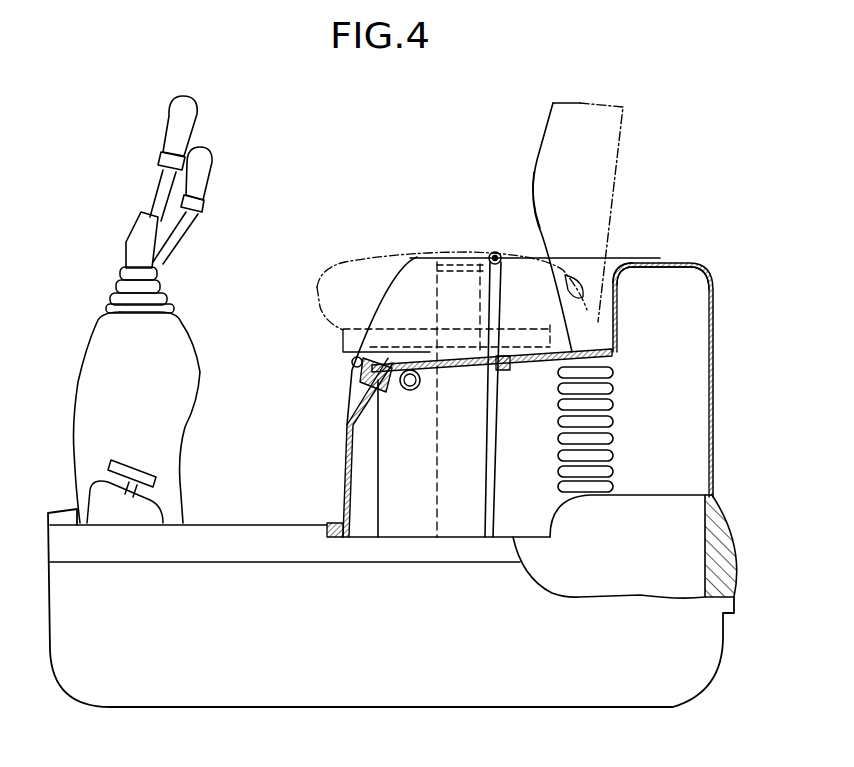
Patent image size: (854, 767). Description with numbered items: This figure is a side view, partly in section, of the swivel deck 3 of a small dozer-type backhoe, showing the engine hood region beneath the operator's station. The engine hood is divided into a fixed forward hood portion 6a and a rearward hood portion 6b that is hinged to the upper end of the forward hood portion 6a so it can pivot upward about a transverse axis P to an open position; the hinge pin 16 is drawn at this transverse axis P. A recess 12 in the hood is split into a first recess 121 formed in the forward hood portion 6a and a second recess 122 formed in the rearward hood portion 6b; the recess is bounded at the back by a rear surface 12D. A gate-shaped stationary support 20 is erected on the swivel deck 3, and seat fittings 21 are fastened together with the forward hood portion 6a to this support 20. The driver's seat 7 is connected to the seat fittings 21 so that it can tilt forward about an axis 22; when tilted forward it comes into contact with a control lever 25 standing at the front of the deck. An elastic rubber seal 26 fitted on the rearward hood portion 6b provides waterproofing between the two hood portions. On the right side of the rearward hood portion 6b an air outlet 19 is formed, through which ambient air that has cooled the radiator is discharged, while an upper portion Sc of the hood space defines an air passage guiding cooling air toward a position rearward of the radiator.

The swivel deck 3 is at (243, 547).
The control lever 25 is at (177, 110).
The driver's seat 7 is at (347, 263).
The forward hood portion 6a is at (345, 427).
The first recess 121 is at (427, 360).
The axis 22 is at (355, 363).
The seat fittings 21 is at (358, 388).
The transverse axis P is at (490, 252).
The pivot pin 16 is at (495, 255).
The gate-shaped stationary support 20 is at (467, 437).
The elastic rubber seal 26 is at (500, 366).
The recess 12 is at (597, 343).
The second recess 122 is at (534, 172).
The rearward hood portion 6b is at (675, 261).
The rear surface 12D is at (610, 260).
The upper portion Sc is at (684, 298).
The air outlet 19 is at (617, 421).